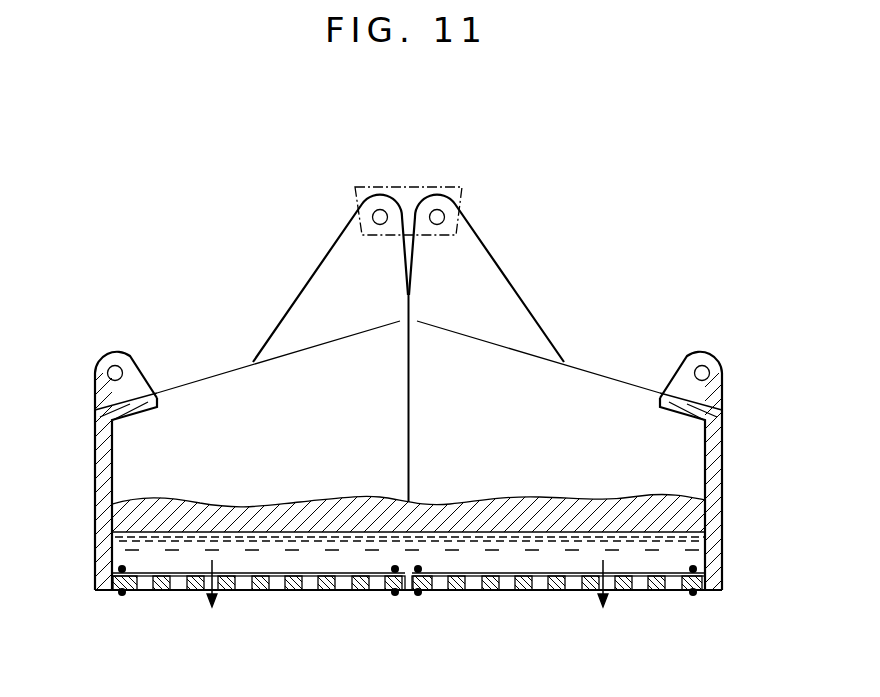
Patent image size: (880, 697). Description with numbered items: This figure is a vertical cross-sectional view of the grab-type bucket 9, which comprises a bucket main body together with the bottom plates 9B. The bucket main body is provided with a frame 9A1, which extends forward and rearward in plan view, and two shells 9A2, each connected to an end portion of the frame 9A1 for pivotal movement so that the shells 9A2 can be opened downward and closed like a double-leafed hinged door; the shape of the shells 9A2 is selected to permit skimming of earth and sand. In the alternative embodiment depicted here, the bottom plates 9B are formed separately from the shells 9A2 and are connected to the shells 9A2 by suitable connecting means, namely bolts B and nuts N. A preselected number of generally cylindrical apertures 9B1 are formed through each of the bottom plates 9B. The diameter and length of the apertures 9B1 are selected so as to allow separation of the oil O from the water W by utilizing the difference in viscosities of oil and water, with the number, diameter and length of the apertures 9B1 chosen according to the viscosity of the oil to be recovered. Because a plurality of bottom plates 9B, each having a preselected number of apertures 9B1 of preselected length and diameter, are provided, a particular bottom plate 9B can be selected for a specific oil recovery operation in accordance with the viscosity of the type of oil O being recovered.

The grab-type bucket 9 is at (518, 265).
The frame 9A1 is at (405, 198).
The shell 9A2 is at (198, 415).
The bottom plate 9B is at (226, 595).
The aperture 9B1 is at (308, 590).
The bolt B is at (122, 596).
The nut N is at (120, 569).
The oil O is at (675, 512).
The water W is at (670, 550).